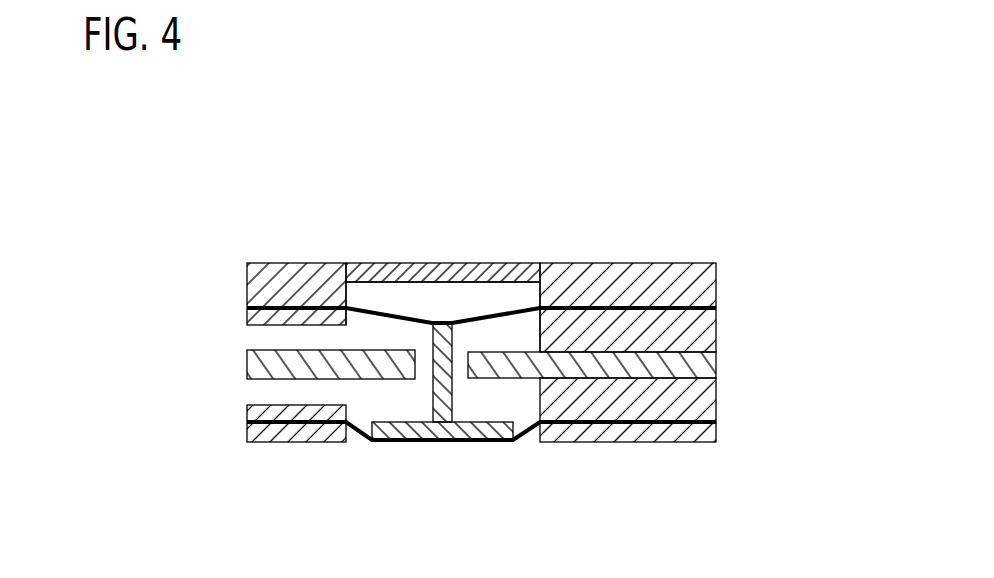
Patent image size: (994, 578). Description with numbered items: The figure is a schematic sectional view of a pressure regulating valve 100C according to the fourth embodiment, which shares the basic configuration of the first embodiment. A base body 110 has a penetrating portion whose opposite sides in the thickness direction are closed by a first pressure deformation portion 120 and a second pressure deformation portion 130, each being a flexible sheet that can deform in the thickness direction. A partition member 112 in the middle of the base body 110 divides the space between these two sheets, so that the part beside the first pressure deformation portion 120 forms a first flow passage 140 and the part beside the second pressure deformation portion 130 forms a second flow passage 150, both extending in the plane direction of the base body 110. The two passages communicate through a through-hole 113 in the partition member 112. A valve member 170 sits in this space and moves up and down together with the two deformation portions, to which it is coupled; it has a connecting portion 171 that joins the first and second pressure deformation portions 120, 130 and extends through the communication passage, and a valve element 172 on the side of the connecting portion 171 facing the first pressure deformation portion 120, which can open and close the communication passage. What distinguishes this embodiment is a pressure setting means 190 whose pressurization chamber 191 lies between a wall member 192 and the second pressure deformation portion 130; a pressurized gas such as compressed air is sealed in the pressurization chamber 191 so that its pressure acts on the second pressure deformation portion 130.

The pressure regulating valve 100C is at (490, 320).
The base body 110 is at (628, 263).
The partition member 112 is at (495, 358).
The through-hole 113 is at (422, 360).
The first pressure deformation portion 120 is at (518, 442).
The second pressure deformation portion 130 is at (357, 323).
The first flow passage 140 is at (362, 398).
The second flow passage 150 is at (383, 305).
The valve member 170 is at (455, 378).
The connecting portion 171 is at (432, 385).
The valve element 172 is at (465, 433).
The pressure setting means 190 is at (458, 262).
The pressurization chamber 191 is at (495, 298).
The wall member 192 is at (445, 263).